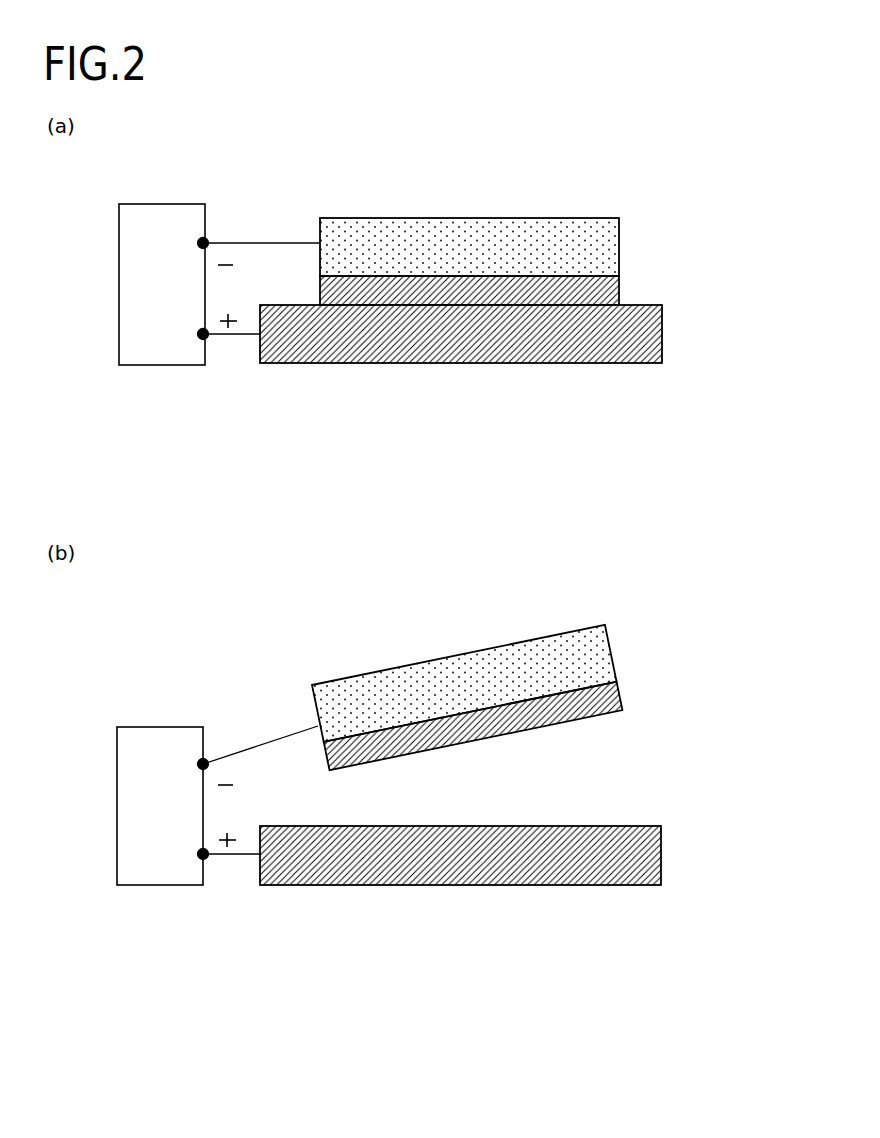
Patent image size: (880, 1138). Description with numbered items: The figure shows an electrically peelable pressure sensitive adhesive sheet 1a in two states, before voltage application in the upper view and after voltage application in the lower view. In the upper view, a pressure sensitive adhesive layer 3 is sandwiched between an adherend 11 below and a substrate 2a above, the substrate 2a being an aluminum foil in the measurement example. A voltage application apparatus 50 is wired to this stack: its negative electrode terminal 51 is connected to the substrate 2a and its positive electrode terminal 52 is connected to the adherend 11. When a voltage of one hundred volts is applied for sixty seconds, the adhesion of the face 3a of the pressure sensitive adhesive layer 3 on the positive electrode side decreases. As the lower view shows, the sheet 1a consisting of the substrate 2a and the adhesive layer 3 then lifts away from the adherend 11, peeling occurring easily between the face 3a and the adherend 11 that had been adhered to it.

The electrically peelable pressure sensitive adhesive sheet 1a is at (637, 212).
The substrate 2a is at (608, 253).
The pressure sensitive adhesive layer 3 is at (604, 293).
The face of the pressure sensitive adhesive layer on the positive electrode side 3a is at (574, 719).
The adherend 11 is at (638, 341).
The voltage application apparatus 50 is at (160, 350).
The negative electrode terminal 51 is at (205, 241).
The positive electrode terminal 52 is at (205, 336).